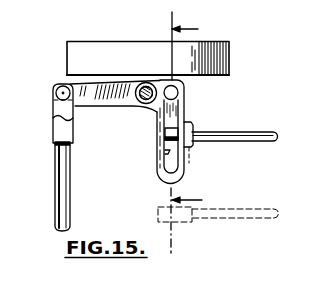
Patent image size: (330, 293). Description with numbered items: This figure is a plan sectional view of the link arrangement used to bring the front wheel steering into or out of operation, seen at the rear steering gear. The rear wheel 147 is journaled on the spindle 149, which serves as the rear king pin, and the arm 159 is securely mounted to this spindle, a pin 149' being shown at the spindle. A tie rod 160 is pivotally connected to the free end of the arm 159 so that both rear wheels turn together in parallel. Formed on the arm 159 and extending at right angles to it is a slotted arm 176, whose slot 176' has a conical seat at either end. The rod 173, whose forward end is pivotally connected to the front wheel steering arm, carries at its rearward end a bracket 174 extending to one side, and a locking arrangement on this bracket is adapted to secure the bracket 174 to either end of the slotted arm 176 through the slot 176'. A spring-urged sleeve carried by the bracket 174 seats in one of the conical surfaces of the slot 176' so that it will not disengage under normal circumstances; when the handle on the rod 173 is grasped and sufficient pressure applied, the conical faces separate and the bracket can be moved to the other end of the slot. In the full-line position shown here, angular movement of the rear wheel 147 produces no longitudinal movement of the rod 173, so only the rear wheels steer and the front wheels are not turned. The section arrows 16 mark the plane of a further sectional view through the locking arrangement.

The section line 16- 16 is at (191, 131).
The rear wheel 147 is at (110, 68).
The spindle 149 is at (115, 104).
The pivot pin head 149' is at (144, 78).
The arm 159 is at (75, 91).
The tie rod 160 is at (70, 193).
The rod 173 is at (249, 131).
The bracket 174 is at (172, 116).
The slotted arm 176 is at (195, 146).
The slot 176' is at (145, 148).